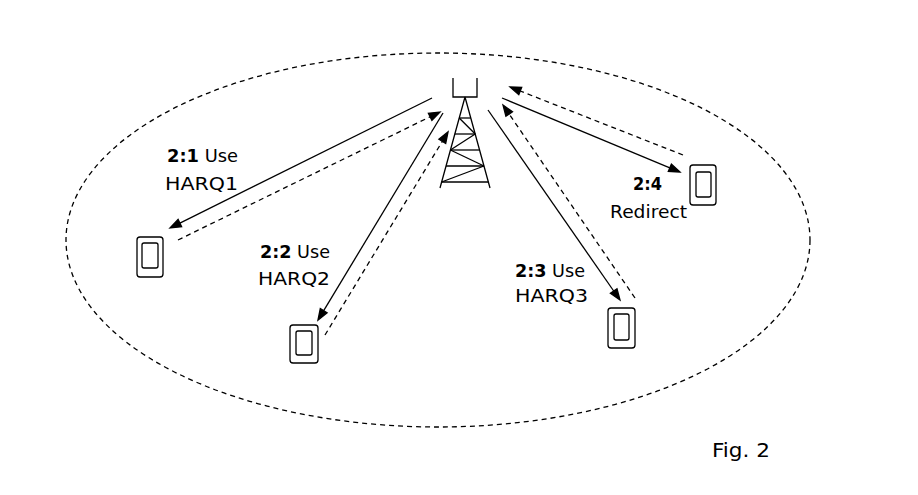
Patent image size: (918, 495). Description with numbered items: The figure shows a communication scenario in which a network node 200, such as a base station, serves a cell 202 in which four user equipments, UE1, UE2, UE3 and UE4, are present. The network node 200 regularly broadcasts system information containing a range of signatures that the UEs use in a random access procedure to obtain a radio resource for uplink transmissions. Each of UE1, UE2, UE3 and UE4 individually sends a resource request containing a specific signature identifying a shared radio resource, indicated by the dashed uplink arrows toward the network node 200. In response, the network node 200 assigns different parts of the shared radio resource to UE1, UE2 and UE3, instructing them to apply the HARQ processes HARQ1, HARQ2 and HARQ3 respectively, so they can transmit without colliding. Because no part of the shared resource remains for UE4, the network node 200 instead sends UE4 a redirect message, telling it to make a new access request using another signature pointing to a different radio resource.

The network node 200 is at (440, 74).
The cell 202 is at (650, 60).
The first user equipment UE1 is at (163, 259).
The second user equipment UE2 is at (318, 345).
The third user equipment UE3 is at (635, 328).
The fourth user equipment UE4 is at (716, 188).